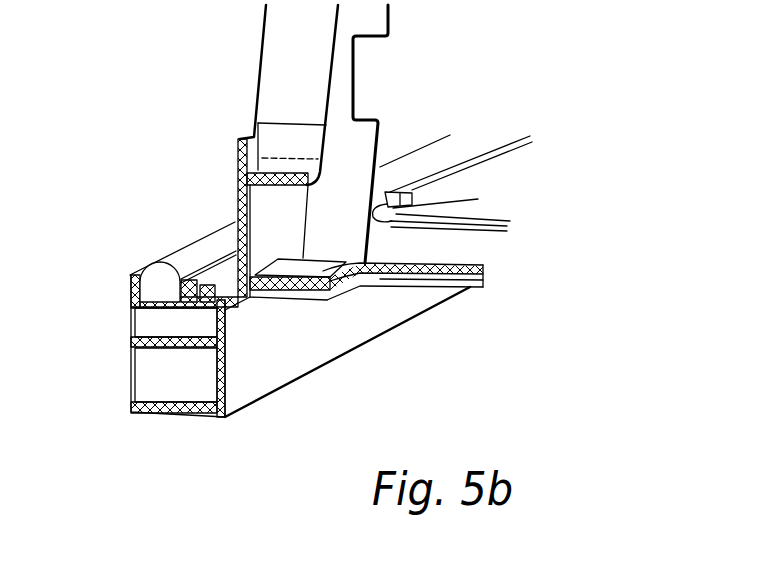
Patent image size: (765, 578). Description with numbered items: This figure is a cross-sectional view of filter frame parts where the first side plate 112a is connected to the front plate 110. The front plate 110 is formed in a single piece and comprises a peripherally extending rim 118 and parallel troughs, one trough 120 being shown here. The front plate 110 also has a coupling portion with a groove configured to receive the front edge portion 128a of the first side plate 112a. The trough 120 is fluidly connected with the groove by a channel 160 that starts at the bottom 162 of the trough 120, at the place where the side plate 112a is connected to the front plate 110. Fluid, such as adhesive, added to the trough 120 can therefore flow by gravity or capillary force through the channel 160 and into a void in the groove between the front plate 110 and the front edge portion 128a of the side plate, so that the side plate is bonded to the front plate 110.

The first side plate 112a is at (258, 62).
The bottom of the trough 162 is at (307, 270).
The trough 120 is at (430, 281).
The channel 160 is at (312, 298).
The front edge portion of the first side plate 128a is at (275, 270).
The front plate 110 is at (275, 389).
The rim 118 is at (130, 297).